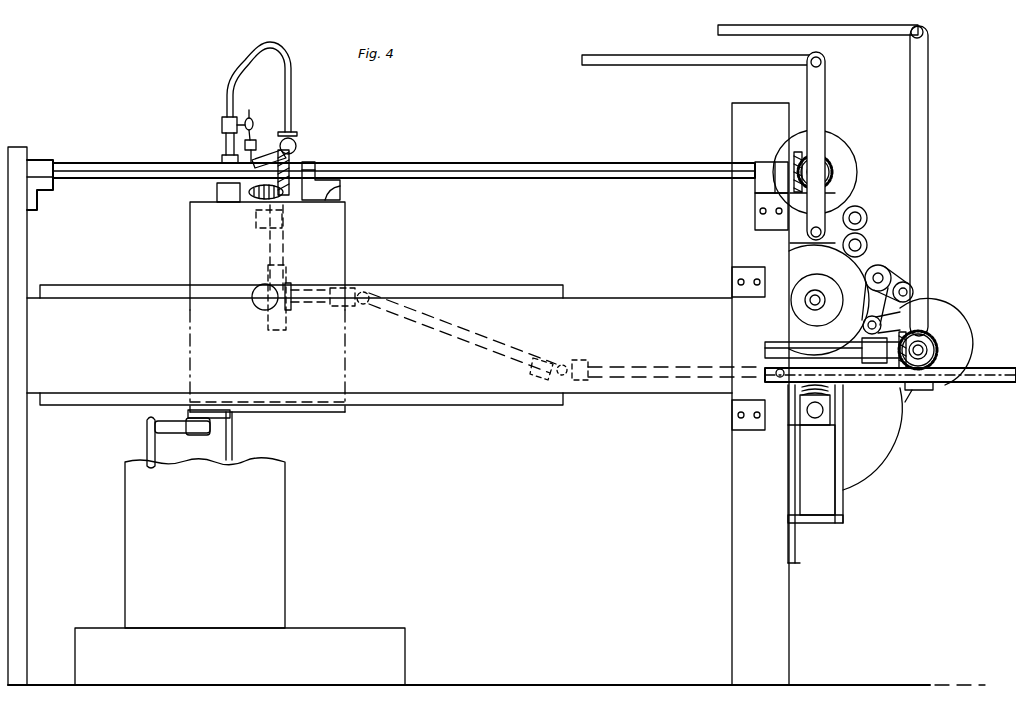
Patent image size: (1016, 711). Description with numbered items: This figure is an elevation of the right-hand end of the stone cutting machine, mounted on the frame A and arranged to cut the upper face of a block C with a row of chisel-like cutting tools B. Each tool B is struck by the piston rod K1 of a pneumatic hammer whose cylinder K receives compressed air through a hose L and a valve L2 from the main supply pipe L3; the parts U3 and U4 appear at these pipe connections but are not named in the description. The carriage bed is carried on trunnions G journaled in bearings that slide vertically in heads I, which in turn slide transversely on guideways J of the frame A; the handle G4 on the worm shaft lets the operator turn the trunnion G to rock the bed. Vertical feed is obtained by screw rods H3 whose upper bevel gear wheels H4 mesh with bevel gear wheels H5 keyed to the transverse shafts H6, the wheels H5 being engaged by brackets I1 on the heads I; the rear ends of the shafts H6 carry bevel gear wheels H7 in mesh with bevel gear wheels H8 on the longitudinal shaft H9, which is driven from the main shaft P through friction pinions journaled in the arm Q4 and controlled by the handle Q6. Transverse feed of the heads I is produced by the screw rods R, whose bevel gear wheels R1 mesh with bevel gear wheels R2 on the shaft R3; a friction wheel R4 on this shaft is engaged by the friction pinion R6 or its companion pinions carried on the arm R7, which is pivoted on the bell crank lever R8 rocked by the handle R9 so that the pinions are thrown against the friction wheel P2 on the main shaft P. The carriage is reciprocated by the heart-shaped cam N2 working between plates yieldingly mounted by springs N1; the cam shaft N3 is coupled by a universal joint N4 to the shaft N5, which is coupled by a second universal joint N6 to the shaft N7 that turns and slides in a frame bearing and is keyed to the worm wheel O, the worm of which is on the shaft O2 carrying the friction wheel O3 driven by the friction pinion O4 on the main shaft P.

The frame A is at (745, 492).
The cutting tools B is at (236, 429).
The block C is at (240, 571).
The trunnions G is at (256, 306).
The handle G4 is at (150, 442).
The screw rods H3 is at (268, 262).
The bevel gear wheels H4 is at (260, 200).
The bevel gear wheels H5 is at (310, 170).
The transversely extending shafts H6 is at (472, 176).
The bevel gear wheels H7 is at (792, 156).
The bevel gear wheels H8 is at (838, 155).
The longitudinally extending shaft H9 is at (843, 170).
The heads I is at (340, 243).
The brackets I1 is at (335, 173).
The guideways J is at (484, 295).
The cylinders K is at (225, 200).
The piston rod K1 is at (222, 130).
The hose L is at (291, 60).
The valve L2 is at (297, 143).
The main supply pipe L3 is at (292, 198).
The springs N1 is at (836, 474).
The heart-shaped cam N2 is at (281, 330).
The cam shaft N3 is at (323, 306).
The universal joint N4 is at (361, 305).
The shaft N5 is at (502, 342).
The universal joint N6 is at (576, 363).
The shaft N7 is at (684, 365).
The worm wheel O is at (797, 401).
The shaft O2 is at (825, 411).
The friction wheel O3 is at (878, 458).
The friction pinion O4 is at (828, 292).
The main shaft P is at (805, 301).
The friction wheel P2 is at (800, 273).
The arm Q4 is at (800, 237).
The handle Q6 is at (703, 62).
The transverse screw rods R is at (767, 348).
The bevel gear wheels R1 is at (913, 402).
The bevel gear wheels R2 is at (958, 350).
The shaft R3 is at (948, 330).
The friction wheel R4 is at (928, 386).
The friction pinion R6 is at (884, 308).
The arm R7 is at (922, 284).
The bell crank lever R8 is at (928, 116).
The handle R9 is at (880, 25).
The valve U3 is at (249, 119).
The valve box U4 is at (256, 140).